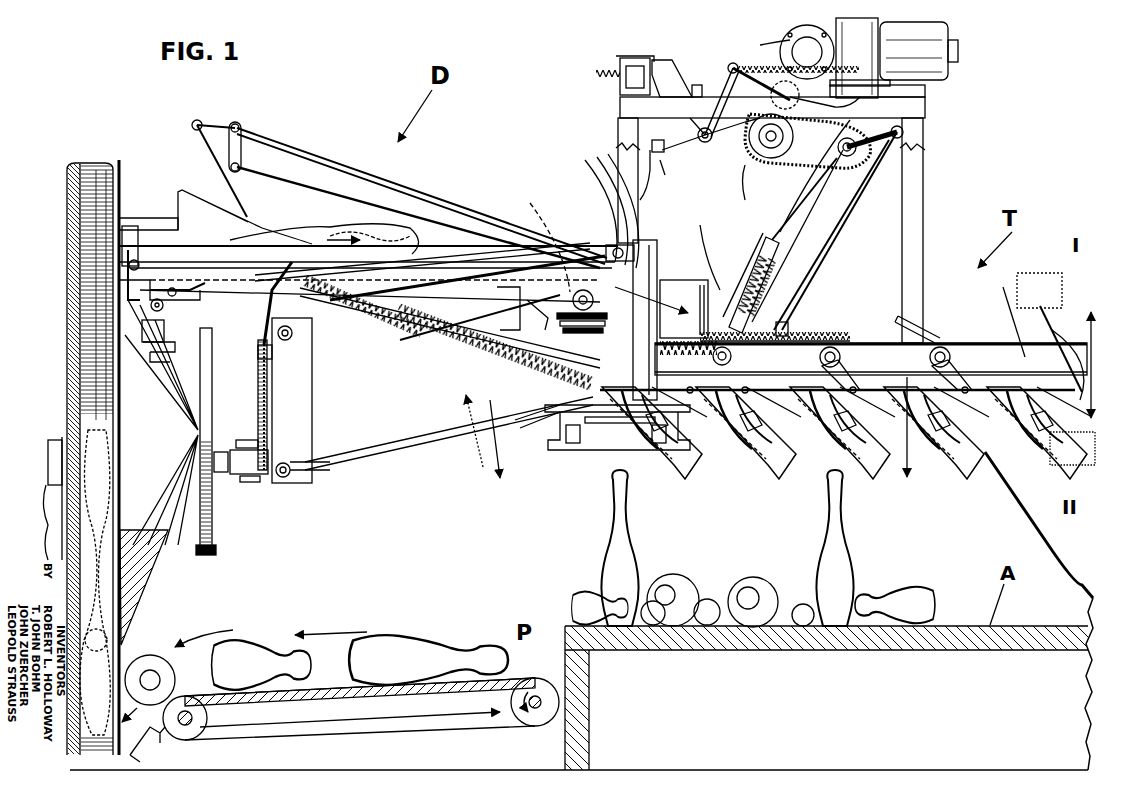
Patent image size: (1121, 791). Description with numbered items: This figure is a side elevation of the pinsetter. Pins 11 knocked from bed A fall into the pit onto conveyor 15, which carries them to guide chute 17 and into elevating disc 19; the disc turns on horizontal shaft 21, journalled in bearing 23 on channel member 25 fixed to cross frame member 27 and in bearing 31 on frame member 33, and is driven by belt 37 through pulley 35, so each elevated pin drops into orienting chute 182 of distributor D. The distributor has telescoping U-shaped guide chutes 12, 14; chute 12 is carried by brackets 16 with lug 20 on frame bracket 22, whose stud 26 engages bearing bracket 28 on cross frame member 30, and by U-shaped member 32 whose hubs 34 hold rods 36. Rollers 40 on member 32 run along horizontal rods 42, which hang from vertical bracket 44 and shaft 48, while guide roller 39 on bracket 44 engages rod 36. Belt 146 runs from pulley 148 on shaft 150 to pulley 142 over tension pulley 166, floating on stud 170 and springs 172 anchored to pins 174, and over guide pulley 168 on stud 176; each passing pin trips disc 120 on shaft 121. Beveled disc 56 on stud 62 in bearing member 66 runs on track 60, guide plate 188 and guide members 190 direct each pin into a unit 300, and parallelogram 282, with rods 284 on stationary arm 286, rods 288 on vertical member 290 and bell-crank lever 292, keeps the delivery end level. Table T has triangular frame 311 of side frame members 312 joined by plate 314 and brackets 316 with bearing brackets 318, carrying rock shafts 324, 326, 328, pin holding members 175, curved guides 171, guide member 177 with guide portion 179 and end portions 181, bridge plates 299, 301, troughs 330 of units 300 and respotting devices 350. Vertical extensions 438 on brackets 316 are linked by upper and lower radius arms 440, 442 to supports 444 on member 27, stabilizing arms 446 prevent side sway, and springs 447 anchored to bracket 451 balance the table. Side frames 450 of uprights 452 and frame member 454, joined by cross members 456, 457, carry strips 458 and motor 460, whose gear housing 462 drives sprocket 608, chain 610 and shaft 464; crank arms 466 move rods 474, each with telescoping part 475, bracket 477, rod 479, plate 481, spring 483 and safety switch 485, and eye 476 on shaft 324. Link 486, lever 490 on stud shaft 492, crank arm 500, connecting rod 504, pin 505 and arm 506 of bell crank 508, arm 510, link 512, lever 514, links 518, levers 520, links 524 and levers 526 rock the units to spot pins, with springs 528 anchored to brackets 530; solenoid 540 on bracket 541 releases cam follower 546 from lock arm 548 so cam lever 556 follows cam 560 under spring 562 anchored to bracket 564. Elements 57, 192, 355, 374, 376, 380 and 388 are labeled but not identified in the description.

The bowling pins 11 is at (438, 650).
The U-shaped pin guide chute 12 is at (325, 165).
The U-shaped pin guide chute 14 is at (360, 205).
The conveyor 15 is at (340, 680).
The brackets 16 is at (118, 250).
The guide chute 17 is at (152, 748).
The pin elevating mechanism 19 is at (150, 565).
The lug 20 is at (150, 302).
The horizontal shaft 21 is at (236, 472).
The frame bracket 22 is at (150, 292).
The bearing 23 is at (262, 478).
The channel member 25 is at (252, 476).
The stud 26 is at (150, 348).
The cross frame member 27 is at (262, 425).
The vertical bearing bracket 28 is at (142, 330).
The horizontal cross frame member 30 is at (150, 360).
The bearing 31 is at (62, 437).
The U-shaped member 32 is at (510, 275).
The frame member 33 is at (52, 440).
The hubs 34 is at (450, 345).
The pulley 35 is at (212, 546).
The rod 36 is at (310, 325).
The belt 37 is at (200, 540).
The guide roller 39 is at (192, 293).
The rollers 40 is at (500, 240).
The horizontal rods 42 is at (470, 262).
The vertical bracket 44 is at (161, 422).
The horizontal shaft 48 is at (614, 193).
The beveled disc 56 is at (536, 321).
The rack 57 is at (845, 325).
The horizontal track 60 is at (850, 336).
The vertical stud 62 is at (575, 332).
The bearing member 66 is at (548, 318).
The disc 120 is at (363, 223).
The shaft 121 is at (408, 262).
The pulley 142 is at (530, 225).
The bowling pin conveyor belt 146 is at (122, 236).
The pulley 148 is at (128, 265).
The shaft 150 is at (126, 285).
The tension pulley 166 is at (270, 292).
The guide pulley 168 is at (482, 340).
The stud 170 is at (230, 305).
The curved guides 171 is at (685, 290).
The springs 172 is at (222, 308).
The pins 174 is at (190, 262).
The pin holding members 175 is at (862, 468).
The stud 176 is at (464, 421).
The pin guide member 177 is at (1045, 305).
The inclined elongated guide portion 179 is at (871, 359).
The end portions 181 is at (1058, 330).
The pin receiving and orienting chute 182 is at (127, 205).
The inclined guide plate 188 is at (604, 176).
The guide members 190 is at (618, 212).
The rack 192 is at (830, 332).
The parallelogram 282 is at (238, 122).
The rods 284 is at (230, 124).
The horizontal stationary arm 286 is at (262, 370).
The rods 288 is at (462, 232).
The vertical member 290 is at (613, 248).
The bell-crank lever 292 is at (215, 145).
The bridge plate 299 is at (672, 280).
The pin spotting units 300 is at (1015, 611).
The bridge plate 301 is at (920, 322).
The triangular frame 311 is at (983, 342).
The side frame members 312 is at (1017, 285).
The plate 314 is at (1055, 278).
The brackets 316 is at (651, 309).
The brackets 318 is at (525, 420).
The transverse rock shaft 324 is at (837, 371).
The transverse rock shaft 326 is at (848, 367).
The transverse rock shaft 328 is at (942, 346).
The trough members 330 is at (830, 472).
The respotting devices 350 is at (578, 480).
The link 355 is at (531, 425).
The plate 374 is at (548, 445).
The plate 376 is at (560, 440).
The frame plate 380 is at (602, 440).
The plate 388 is at (605, 450).
The vertical extension 438 is at (645, 262).
The upper radius arm 440 is at (368, 303).
The lower radius arm 442 is at (428, 440).
The supports 444 is at (312, 468).
The stabilizing arms 446 is at (292, 478).
The springs 447 is at (392, 320).
The side frames 450 is at (928, 178).
The bracket 451 is at (284, 340).
The uprights 452 is at (618, 127).
The longitudinal frame member 454 is at (923, 118).
The cross member 456 is at (905, 112).
The cross member 457 is at (618, 110).
The transverse strips 458 is at (925, 97).
The motor 460 is at (950, 42).
The housing 462 is at (800, 30).
The shaft 464 is at (745, 188).
The crank arm 466 is at (808, 162).
The table supporting rod 474 is at (815, 208).
The telescoping part 475 is at (770, 275).
The eye 476 is at (722, 300).
The bracket 477 is at (750, 285).
The adjustable rod 479 is at (745, 263).
The plate 481 is at (805, 242).
The spring 483 is at (800, 255).
The switch 485 is at (785, 235).
The link 486 is at (772, 58).
The lever 490 is at (728, 70).
The stud shaft 492 is at (705, 249).
The crank arm 500 is at (868, 182).
The connecting rod 504 is at (858, 195).
The pin 505 is at (755, 300).
The arm 506 is at (750, 318).
The bell crank lever 508 is at (698, 356).
The arm 510 is at (742, 470).
The link 512 is at (730, 455).
The lever 514 is at (655, 443).
The link 518 is at (830, 467).
The levers 520 is at (891, 413).
The links 524 is at (948, 475).
The levers 526 is at (985, 360).
The springs 528 is at (680, 440).
The bracket 530 is at (670, 430).
The solenoid 540 is at (634, 58).
The bracket 541 is at (676, 60).
The cam follower 546 is at (661, 180).
The lock arm 548 is at (660, 150).
The cam lever 556 is at (718, 140).
The cam 560 is at (815, 97).
The spring 562 is at (860, 80).
The bracket 564 is at (912, 83).
The sprocket 608 is at (807, 52).
The chain 610 is at (787, 174).